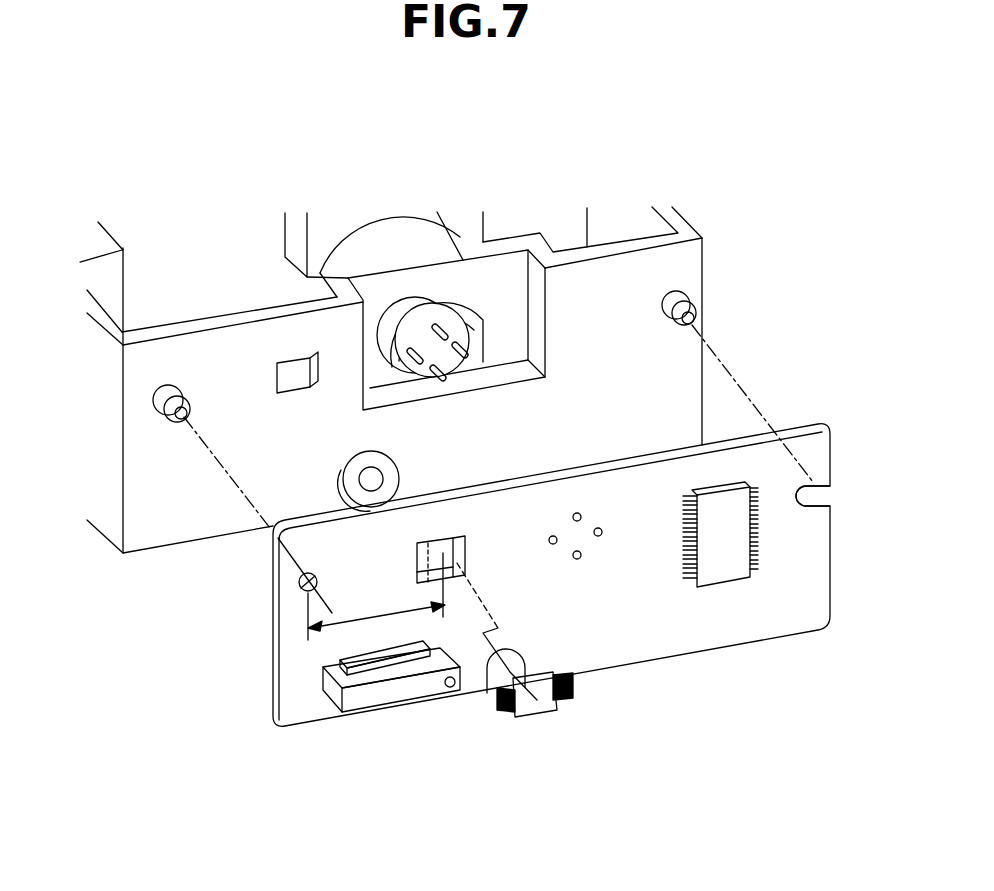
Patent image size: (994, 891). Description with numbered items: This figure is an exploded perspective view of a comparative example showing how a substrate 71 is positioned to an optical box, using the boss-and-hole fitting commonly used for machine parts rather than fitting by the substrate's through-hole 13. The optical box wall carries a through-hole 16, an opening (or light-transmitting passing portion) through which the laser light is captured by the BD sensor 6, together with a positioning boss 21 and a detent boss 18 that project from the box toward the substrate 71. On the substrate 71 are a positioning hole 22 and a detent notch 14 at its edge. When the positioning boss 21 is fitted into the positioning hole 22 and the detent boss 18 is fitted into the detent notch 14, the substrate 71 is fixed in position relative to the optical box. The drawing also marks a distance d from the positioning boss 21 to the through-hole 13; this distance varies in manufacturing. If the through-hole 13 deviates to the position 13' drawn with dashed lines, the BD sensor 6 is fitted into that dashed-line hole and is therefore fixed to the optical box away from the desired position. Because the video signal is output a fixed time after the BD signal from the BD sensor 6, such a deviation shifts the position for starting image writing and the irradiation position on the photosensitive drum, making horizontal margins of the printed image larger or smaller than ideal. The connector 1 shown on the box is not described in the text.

The connector 1 is at (437, 320).
The BD sensor 6 is at (548, 707).
The through-hole 13 is at (450, 502).
The deviated position of the through-hole 13' is at (589, 643).
The detent notch 14 is at (817, 487).
The through-hole 16 is at (293, 372).
The detent boss 18 is at (683, 297).
The positioning boss 21 is at (152, 407).
The positioning hole 22 is at (297, 587).
The substrate 71 is at (817, 580).